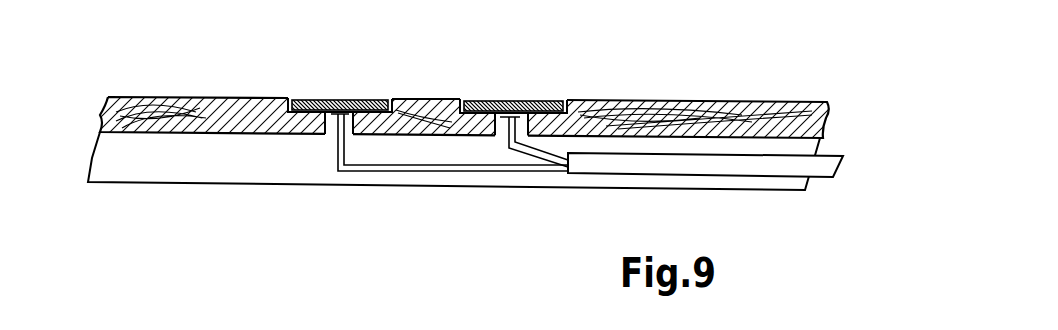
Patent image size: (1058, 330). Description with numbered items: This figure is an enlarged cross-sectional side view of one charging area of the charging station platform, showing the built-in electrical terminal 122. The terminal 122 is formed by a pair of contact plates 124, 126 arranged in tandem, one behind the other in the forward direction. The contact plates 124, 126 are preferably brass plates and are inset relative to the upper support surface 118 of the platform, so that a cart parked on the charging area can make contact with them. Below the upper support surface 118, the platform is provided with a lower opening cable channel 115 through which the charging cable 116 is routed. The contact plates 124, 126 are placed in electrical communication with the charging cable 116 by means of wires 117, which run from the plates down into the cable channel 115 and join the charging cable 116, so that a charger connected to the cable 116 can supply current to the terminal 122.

The cable channel 115 is at (254, 190).
The charging cable 116 is at (681, 170).
The wires 117 is at (378, 168).
The upper support surface 118 is at (150, 96).
The electrical terminal 122 is at (491, 68).
The contact plate 124 is at (525, 99).
The contact plate 126 is at (327, 98).